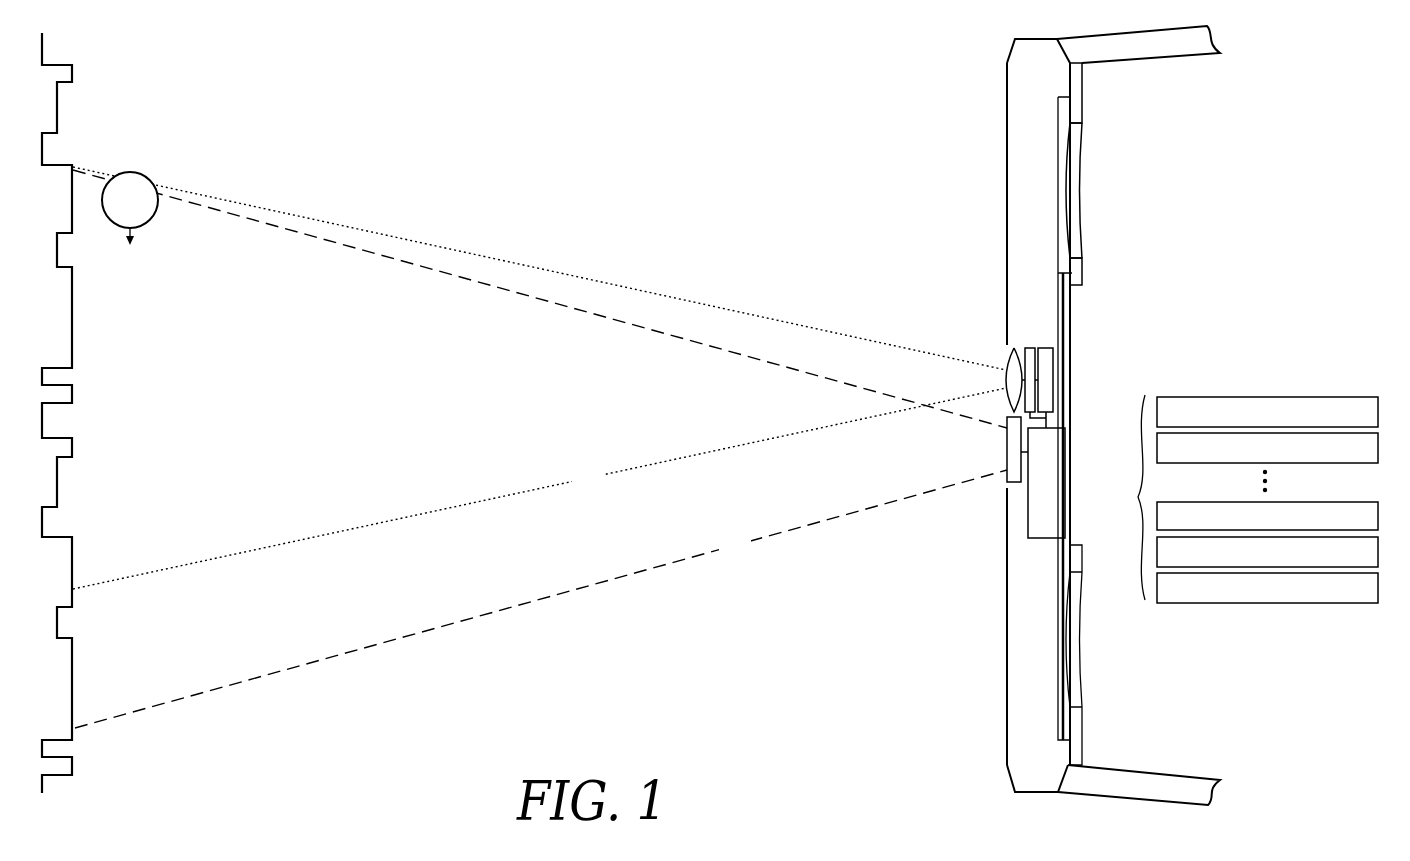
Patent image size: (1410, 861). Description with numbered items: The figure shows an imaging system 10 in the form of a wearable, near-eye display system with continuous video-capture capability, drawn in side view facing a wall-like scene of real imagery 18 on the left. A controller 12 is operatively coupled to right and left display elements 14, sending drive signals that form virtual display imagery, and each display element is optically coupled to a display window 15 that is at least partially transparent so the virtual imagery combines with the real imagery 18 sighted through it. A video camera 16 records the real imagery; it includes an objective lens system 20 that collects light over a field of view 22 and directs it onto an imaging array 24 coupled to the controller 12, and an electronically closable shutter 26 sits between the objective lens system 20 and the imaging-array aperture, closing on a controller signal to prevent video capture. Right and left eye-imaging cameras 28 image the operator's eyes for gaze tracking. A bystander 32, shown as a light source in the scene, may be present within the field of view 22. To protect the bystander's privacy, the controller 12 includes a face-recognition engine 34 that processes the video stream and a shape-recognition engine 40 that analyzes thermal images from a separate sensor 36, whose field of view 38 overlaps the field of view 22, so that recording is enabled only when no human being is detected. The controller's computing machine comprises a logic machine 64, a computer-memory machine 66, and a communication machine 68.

The imaging system 10 is at (866, 139).
The controller 12 is at (1065, 493).
The display elements 14 is at (1082, 93).
The display window 15 is at (1080, 190).
The video camera 16 is at (1102, 387).
The real imagery 18 is at (221, 430).
The objective lens system 20 is at (1006, 366).
The field of view 22 is at (601, 491).
The imaging array 24 is at (1046, 348).
The electronically closable shutter 26 is at (1030, 348).
The eye-imaging cameras 28 is at (1082, 274).
The bystander 32 is at (118, 212).
The face-recognition engine 34 is at (1352, 422).
The sensor 36 is at (1007, 437).
The field of view of sensor 38 is at (748, 558).
The shape-recognition engine 40 is at (1357, 461).
The logic machine 64 is at (1312, 527).
The computer-memory machine 66 is at (1325, 566).
The communication machine 68 is at (1312, 601).